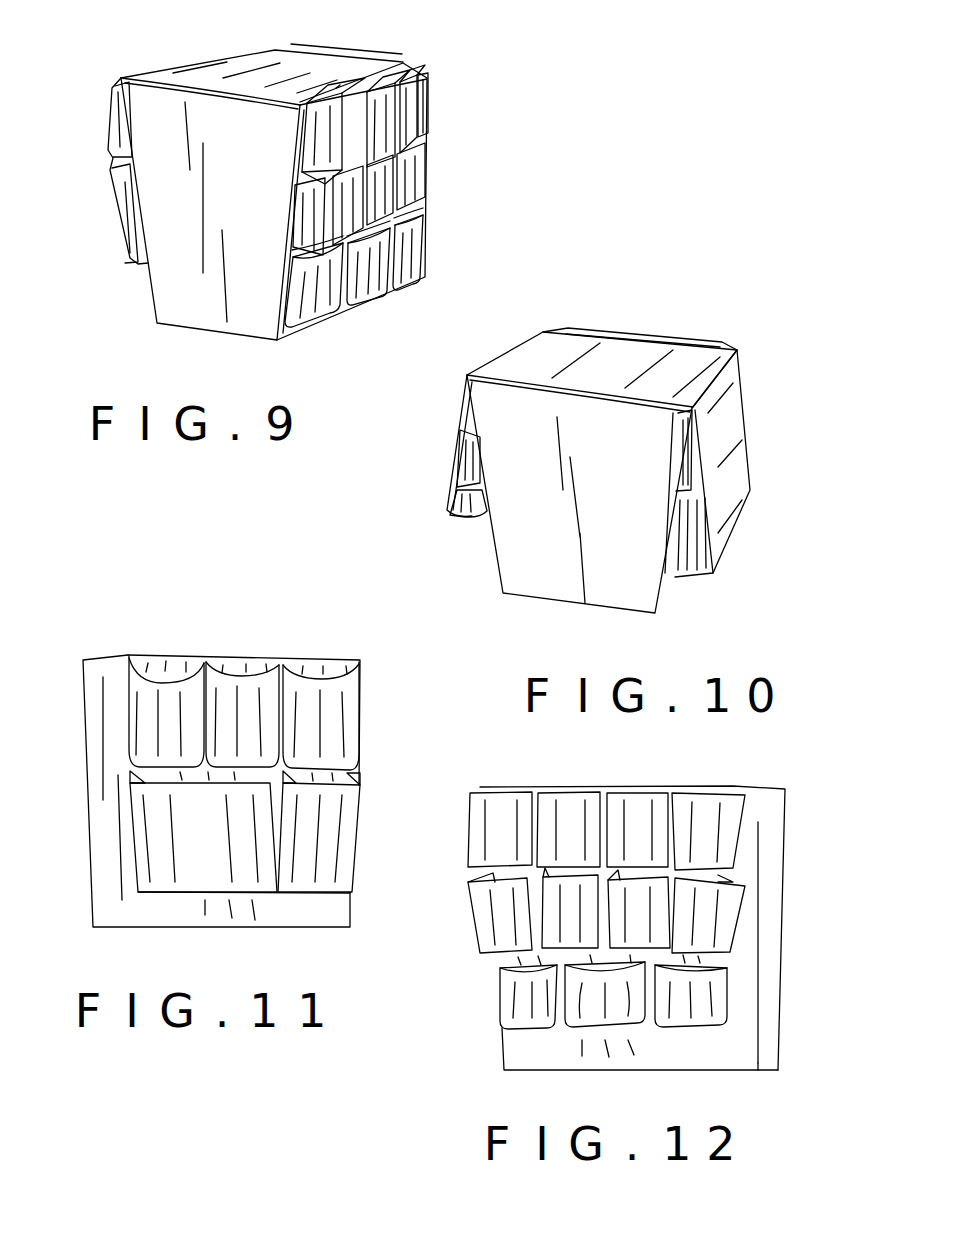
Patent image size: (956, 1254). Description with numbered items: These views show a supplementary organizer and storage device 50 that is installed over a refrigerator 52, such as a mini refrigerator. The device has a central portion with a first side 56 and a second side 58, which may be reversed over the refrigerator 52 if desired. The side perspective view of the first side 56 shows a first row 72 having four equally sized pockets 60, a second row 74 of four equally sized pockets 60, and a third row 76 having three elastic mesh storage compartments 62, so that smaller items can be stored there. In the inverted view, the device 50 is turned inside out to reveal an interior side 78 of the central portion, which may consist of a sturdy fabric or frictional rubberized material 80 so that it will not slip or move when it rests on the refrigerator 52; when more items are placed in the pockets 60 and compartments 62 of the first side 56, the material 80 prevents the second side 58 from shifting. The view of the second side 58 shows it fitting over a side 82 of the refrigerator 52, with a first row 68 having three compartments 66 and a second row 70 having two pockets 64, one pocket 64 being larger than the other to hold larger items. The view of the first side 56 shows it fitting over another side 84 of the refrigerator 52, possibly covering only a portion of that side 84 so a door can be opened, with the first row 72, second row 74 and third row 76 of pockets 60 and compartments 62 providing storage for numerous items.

In FIG. 9, the supplementary organizer and storage device 50 is at (91, 128).
In FIG. 11, the supplementary organizer and storage device 50 is at (362, 653).
In FIG. 12, the supplementary organizer and storage device 50 is at (750, 777).
In FIG. 9, the refrigerator 52 is at (187, 270).
In FIG. 10, the refrigerator 52 is at (637, 567).
In FIG. 11, the refrigerator 52 is at (117, 855).
In FIG. 12, the refrigerator 52 is at (530, 1040).
In FIG. 9, the first side 56 is at (425, 55).
In FIG. 10, the first side 56 is at (450, 415).
In FIG. 12, the first side 56 is at (790, 900).
In FIG. 9, the second side 58 is at (99, 168).
In FIG. 10, the second side 58 is at (752, 423).
In FIG. 11, the second side 58 is at (367, 742).
In FIG. 9, the pockets 60 is at (405, 158).
In FIG. 12, the pockets 60 is at (659, 888).
In FIG. 9, the elastic mesh storage compartments 62 is at (407, 235).
In FIG. 12, the elastic mesh storage compartments 62 is at (720, 1022).
In FIG. 11, the pockets 64 is at (337, 822).
In FIG. 11, the elastic mesh storage compartments 66 is at (337, 695).
In FIG. 11, the first row 68 is at (287, 712).
In FIG. 11, the second row 70 is at (266, 871).
In FIG. 9, the first row 72 is at (441, 110).
In FIG. 12, the first row 72 is at (790, 822).
In FIG. 9, the second row 74 is at (434, 177).
In FIG. 12, the second row 74 is at (782, 971).
In FIG. 9, the third row 76 is at (395, 267).
In FIG. 12, the third row 76 is at (675, 1010).
In FIG. 10, the interior side 78 is at (588, 318).
In FIG. 10, the frictional rubberized material 80 is at (683, 360).
In FIG. 11, the side 82 is at (322, 913).
In FIG. 12, the side 84 is at (759, 1062).